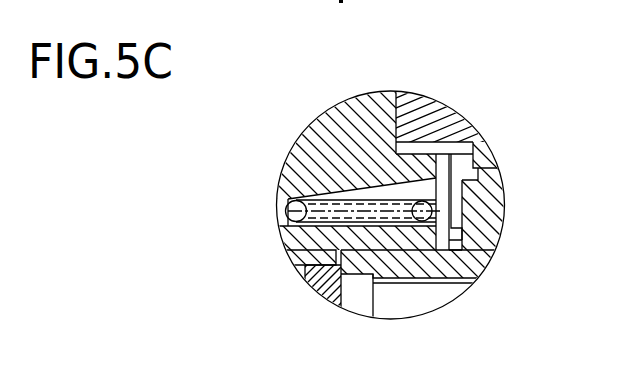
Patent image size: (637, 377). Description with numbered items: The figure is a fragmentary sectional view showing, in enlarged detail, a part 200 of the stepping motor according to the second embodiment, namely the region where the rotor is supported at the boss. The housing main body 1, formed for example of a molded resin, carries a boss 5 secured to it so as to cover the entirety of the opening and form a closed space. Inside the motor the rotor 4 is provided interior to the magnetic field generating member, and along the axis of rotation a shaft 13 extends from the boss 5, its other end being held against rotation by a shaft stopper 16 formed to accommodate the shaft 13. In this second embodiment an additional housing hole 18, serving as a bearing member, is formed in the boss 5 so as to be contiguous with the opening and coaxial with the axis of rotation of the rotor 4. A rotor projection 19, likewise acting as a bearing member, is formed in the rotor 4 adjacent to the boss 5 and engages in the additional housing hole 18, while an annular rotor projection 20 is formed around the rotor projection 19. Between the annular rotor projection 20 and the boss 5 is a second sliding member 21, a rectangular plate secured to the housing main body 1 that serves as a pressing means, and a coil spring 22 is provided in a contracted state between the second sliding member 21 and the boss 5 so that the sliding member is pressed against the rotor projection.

The part of the stepping motor 200 is at (334, 98).
The housing main body 1 is at (431, 113).
The rotor 4 is at (490, 268).
The boss 5 is at (314, 140).
The shaft 13 is at (393, 300).
The shaft stopper 16 is at (323, 287).
The additional housing hole 18 is at (285, 248).
The rotor projection 19 is at (435, 276).
The annular rotor projection 20 is at (497, 248).
The second sliding member 21 is at (452, 170).
The coil spring 22 is at (318, 182).